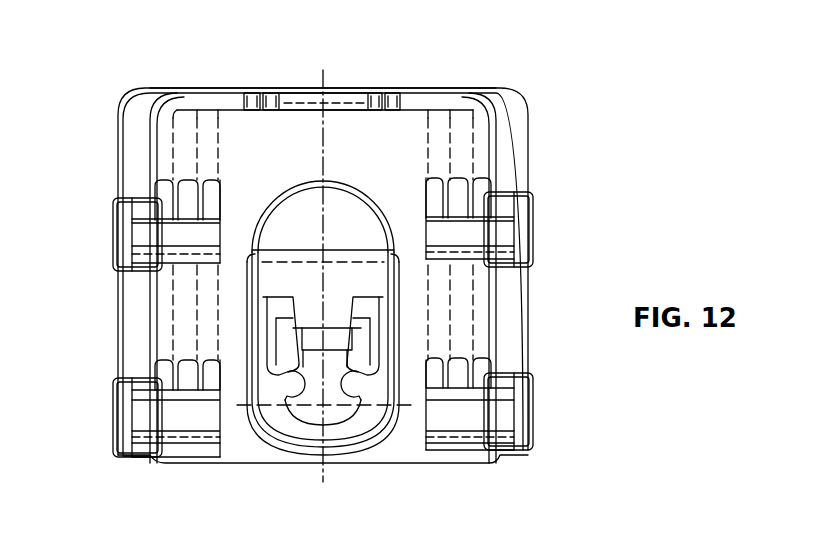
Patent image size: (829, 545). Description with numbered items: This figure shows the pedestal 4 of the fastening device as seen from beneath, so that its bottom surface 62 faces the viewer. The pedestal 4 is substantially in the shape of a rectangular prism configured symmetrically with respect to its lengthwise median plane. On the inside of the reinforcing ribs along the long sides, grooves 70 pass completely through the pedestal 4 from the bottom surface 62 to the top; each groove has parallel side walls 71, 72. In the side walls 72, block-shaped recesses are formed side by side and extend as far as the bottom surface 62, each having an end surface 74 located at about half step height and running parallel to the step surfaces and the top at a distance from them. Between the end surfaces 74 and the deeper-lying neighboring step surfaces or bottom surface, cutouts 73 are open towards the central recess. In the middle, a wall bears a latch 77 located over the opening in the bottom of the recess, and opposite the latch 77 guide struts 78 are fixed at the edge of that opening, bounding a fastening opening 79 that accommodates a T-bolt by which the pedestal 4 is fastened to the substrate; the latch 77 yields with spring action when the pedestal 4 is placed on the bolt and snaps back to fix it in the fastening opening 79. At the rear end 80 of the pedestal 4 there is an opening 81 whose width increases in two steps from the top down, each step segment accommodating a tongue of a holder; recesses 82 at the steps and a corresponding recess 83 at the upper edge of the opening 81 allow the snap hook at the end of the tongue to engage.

The pedestal 4 is at (457, 83).
The bottom surface 62 is at (243, 151).
The grooves 70 is at (205, 258).
The side wall 71 is at (200, 243).
The side wall 72 is at (145, 232).
The cutouts 73 is at (165, 180).
The end surface 74 is at (170, 368).
The latch 77 is at (318, 350).
The guide struts 78 is at (287, 378).
The fastening opening 79 is at (338, 408).
The rear end 80 is at (190, 89).
The opening 81 is at (303, 100).
The recesses 82 is at (268, 92).
The recess 83 is at (352, 92).